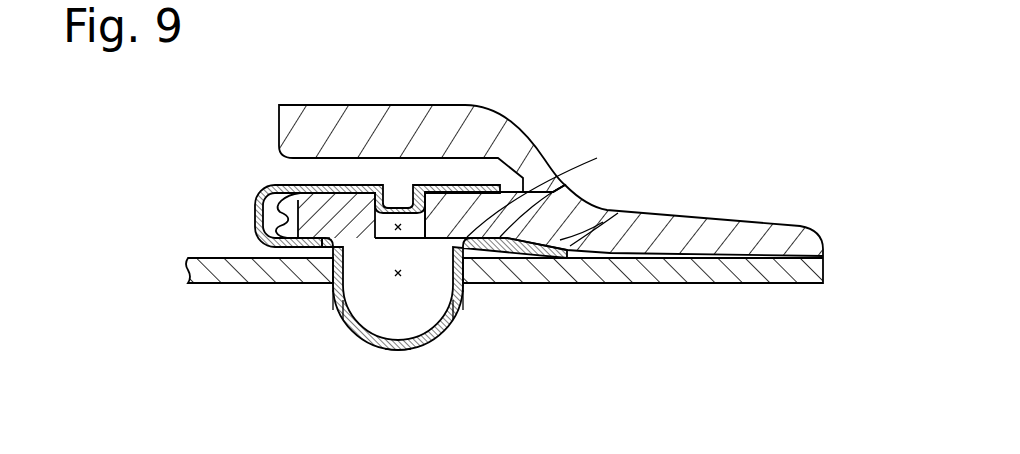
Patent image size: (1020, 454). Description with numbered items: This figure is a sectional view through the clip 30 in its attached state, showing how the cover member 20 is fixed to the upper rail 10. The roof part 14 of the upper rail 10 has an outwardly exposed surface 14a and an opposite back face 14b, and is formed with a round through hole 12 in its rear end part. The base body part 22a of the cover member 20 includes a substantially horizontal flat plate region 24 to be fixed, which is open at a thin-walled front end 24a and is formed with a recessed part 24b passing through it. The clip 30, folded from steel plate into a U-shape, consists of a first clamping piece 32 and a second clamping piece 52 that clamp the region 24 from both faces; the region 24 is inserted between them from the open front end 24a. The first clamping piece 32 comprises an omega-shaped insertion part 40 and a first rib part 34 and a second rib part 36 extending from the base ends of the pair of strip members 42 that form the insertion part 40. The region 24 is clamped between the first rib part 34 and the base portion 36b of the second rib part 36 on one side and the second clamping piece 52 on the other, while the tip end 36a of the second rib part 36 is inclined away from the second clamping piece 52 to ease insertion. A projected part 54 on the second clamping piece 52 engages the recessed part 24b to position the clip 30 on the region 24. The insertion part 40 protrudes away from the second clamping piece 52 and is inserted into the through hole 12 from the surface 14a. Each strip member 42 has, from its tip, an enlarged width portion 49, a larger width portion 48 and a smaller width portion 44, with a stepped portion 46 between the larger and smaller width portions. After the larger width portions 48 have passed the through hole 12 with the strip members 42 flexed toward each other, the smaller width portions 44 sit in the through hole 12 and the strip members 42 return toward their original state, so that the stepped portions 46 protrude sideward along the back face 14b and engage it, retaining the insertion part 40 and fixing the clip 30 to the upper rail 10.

The upper rail 10 is at (460, 296).
The through hole 12 is at (400, 277).
The roof part 14 is at (213, 277).
The surface 14a is at (207, 257).
The back face 14b is at (223, 285).
The cover member 20 is at (457, 124).
The base body part 22a is at (508, 115).
The region to be fixed 24 is at (355, 203).
The front end 24a is at (296, 196).
The recessed part 24b is at (407, 199).
The clip 30 is at (320, 202).
The first clamping piece 32 is at (270, 249).
The first rib part 34 is at (293, 258).
The second rib part 36 is at (543, 254).
The tip end 36a is at (618, 213).
The base portion 36b is at (551, 182).
The insertion part 40 is at (442, 346).
The strip member 42 is at (337, 307).
The smaller width portion 44 is at (330, 262).
The stepped portion 46 is at (333, 290).
The larger width portion 48 is at (344, 322).
The enlarged width portion 49 is at (384, 343).
The second clamping piece 52 is at (277, 181).
The projected part 54 is at (396, 207).